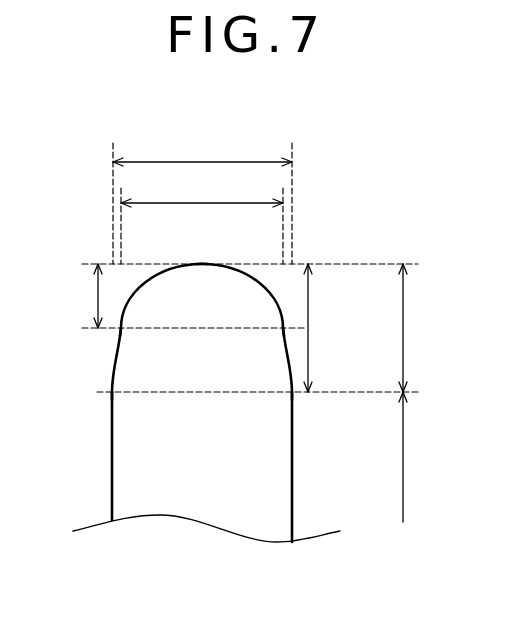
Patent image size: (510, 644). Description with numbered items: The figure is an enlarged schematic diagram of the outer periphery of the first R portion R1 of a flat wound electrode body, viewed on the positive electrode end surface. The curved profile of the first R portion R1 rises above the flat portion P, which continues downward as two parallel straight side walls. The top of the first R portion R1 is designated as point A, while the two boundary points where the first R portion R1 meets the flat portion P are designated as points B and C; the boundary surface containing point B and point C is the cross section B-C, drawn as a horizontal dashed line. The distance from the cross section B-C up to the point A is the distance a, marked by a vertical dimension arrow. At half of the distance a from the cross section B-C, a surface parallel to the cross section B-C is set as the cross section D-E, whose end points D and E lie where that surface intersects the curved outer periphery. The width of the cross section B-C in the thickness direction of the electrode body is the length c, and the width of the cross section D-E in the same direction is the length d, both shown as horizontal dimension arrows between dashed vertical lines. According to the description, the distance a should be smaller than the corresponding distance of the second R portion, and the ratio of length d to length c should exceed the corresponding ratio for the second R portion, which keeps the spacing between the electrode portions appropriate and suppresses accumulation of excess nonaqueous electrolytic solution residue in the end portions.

The top of the first R portion A is at (202, 252).
The boundary point of the first R portion and the flat portion B is at (112, 393).
The boundary point of the first R portion and the flat portion C is at (292, 393).
The end point of cross section D-E D is at (119, 331).
The end point of cross section D- E is at (286, 330).
The length of the cross section B-C c is at (202, 151).
The length of the cross section D-E d is at (202, 191).
The distance from the cross section B-C to the point A a is at (314, 328).
The first R portion R1 is at (416, 328).
The flat portion P is at (411, 457).